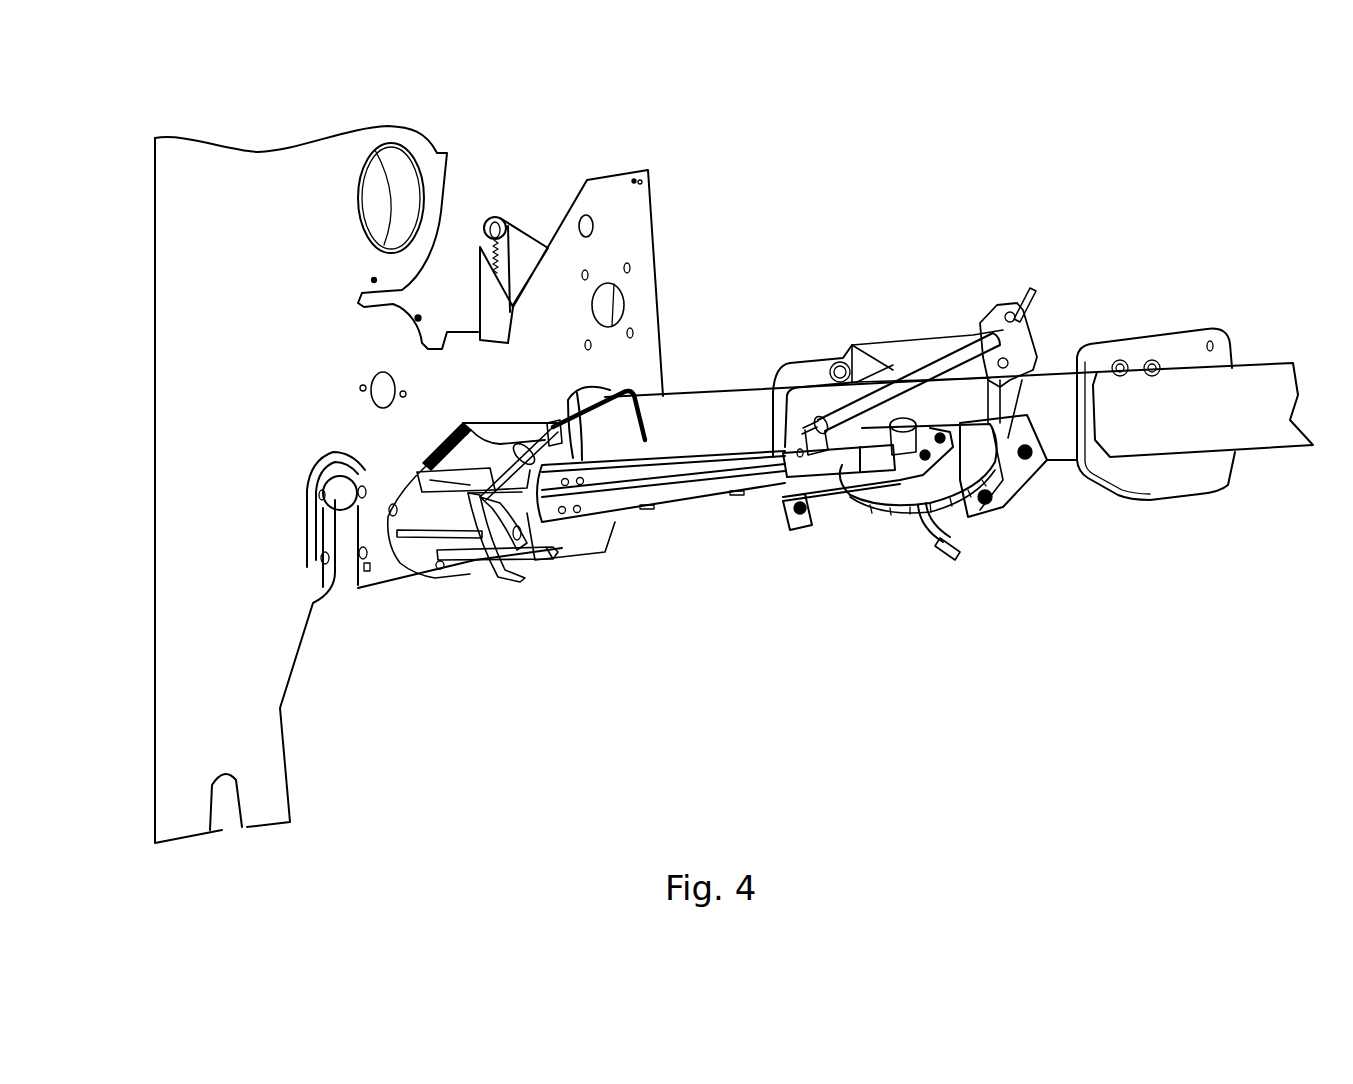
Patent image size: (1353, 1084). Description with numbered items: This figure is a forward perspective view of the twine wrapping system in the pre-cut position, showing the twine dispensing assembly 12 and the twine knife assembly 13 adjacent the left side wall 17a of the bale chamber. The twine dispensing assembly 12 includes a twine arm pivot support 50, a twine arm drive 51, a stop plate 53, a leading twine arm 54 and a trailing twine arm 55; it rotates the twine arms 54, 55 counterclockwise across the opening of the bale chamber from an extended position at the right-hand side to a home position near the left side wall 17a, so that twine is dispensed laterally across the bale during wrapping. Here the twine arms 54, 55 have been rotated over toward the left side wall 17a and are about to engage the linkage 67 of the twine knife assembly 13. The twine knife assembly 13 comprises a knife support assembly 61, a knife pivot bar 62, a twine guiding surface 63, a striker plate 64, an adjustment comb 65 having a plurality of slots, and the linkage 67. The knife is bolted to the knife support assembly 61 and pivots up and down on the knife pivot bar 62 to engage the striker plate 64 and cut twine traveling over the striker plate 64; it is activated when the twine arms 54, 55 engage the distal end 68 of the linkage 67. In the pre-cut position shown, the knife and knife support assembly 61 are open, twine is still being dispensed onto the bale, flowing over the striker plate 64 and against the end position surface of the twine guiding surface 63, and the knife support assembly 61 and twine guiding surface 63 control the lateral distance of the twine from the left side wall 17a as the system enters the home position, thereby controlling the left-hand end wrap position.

The left side wall 17a is at (230, 328).
The twine dispensing assembly 12 is at (1005, 475).
The twine knife assembly 13 is at (487, 549).
The twine arm pivot support 50 is at (1025, 372).
The twine arm drive 51 is at (938, 505).
The stop plate 53 is at (995, 492).
The leading twine arm 54 is at (693, 458).
The trailing twine arm 55 is at (697, 498).
The knife support assembly 61 is at (463, 567).
The knife pivot bar 62 is at (413, 538).
The twine guiding surface 63 is at (500, 578).
The striker plate 64 is at (557, 563).
The adjustment comb 65 is at (433, 467).
The linkage 67 is at (578, 410).
The distal end 68 is at (647, 427).